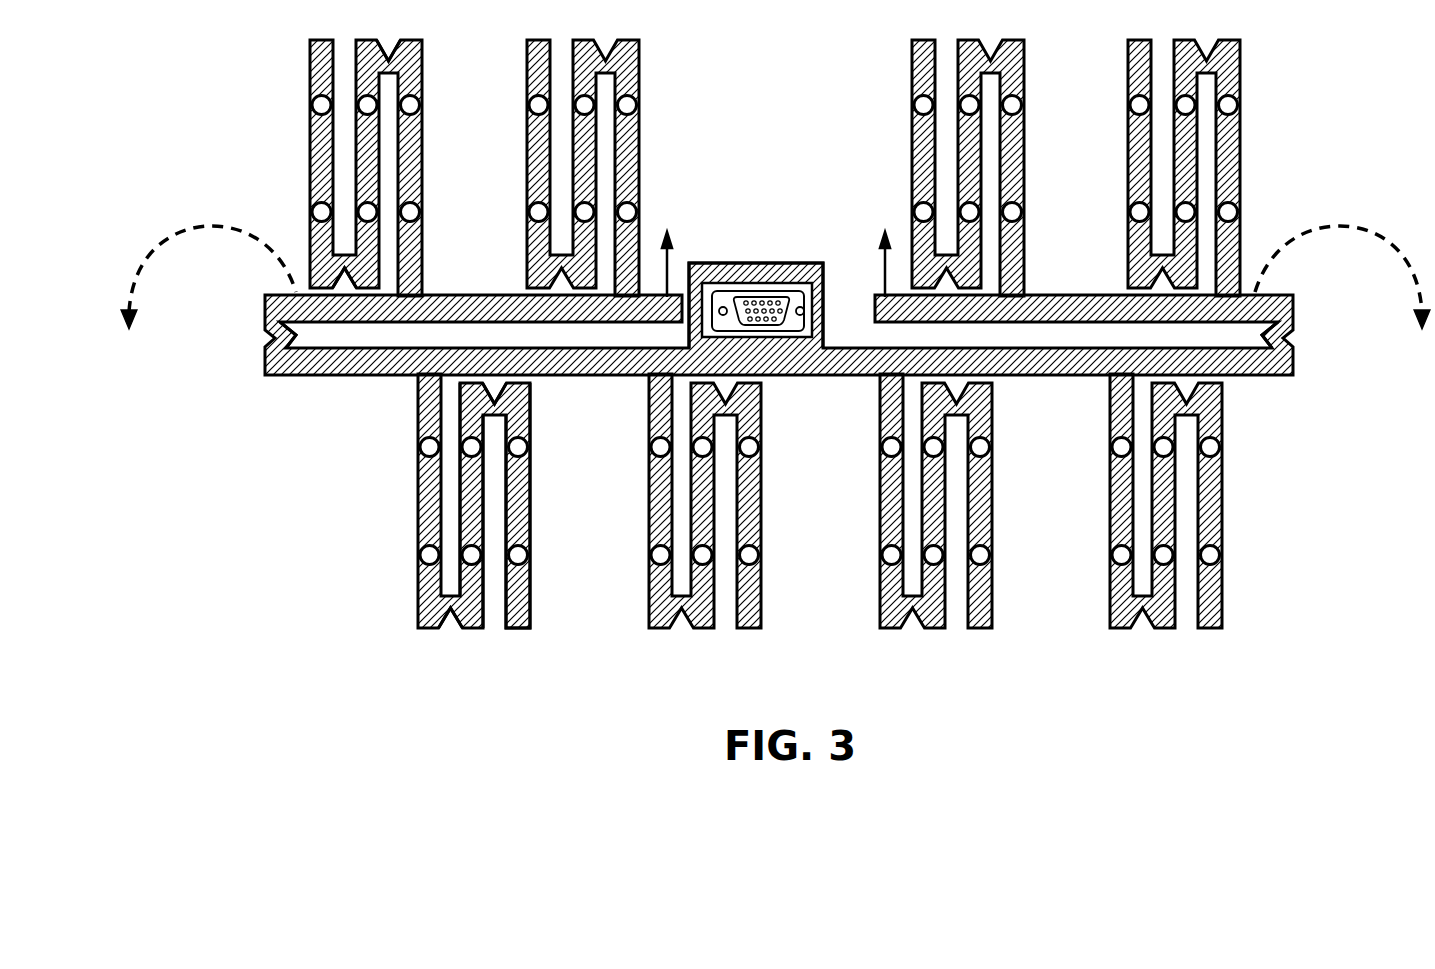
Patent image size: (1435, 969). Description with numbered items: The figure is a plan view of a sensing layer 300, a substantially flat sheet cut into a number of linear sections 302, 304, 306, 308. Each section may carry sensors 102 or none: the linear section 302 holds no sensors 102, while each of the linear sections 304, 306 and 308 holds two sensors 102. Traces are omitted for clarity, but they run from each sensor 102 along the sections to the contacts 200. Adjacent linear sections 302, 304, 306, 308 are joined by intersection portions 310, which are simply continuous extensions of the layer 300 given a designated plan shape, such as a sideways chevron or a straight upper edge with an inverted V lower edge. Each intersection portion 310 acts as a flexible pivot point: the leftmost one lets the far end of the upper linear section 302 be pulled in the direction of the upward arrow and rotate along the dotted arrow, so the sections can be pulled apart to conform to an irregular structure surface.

The sensor 102 is at (313, 102).
The contacts 200 is at (748, 292).
The sensing layer 300 is at (775, 413).
The linear section 302 is at (455, 305).
The linear section 304 is at (418, 498).
The linear section 306 is at (485, 507).
The linear section 308 is at (530, 535).
The intersection portion 310 is at (495, 403).